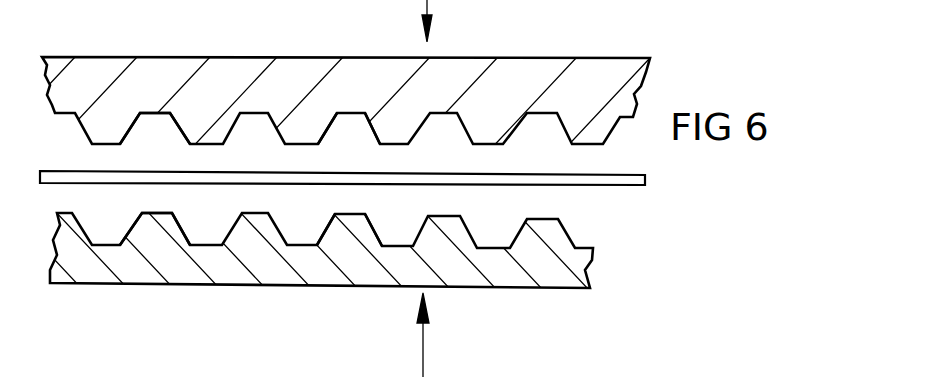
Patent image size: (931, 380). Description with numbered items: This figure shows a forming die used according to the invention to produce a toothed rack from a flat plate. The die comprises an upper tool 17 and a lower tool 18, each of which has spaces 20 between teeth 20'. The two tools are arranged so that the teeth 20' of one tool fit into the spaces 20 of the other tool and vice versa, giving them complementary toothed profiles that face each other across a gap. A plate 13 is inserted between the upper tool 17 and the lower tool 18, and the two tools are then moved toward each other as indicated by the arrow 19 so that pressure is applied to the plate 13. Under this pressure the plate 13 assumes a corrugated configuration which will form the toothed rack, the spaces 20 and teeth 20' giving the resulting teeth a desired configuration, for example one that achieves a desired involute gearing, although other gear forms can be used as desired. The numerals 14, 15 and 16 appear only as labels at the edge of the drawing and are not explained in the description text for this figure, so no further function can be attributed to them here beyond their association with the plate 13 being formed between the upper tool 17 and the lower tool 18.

The plate 13 is at (645, 180).
The layer 14 is at (373, 5).
The layer 15 is at (296, 5).
The layer 16 is at (219, 5).
The upper tool 17 is at (632, 96).
The lower tool 18 is at (590, 265).
The arrow 19 is at (427, 358).
The spaces 20 is at (178, 175).
The teeth 20' is at (374, 179).